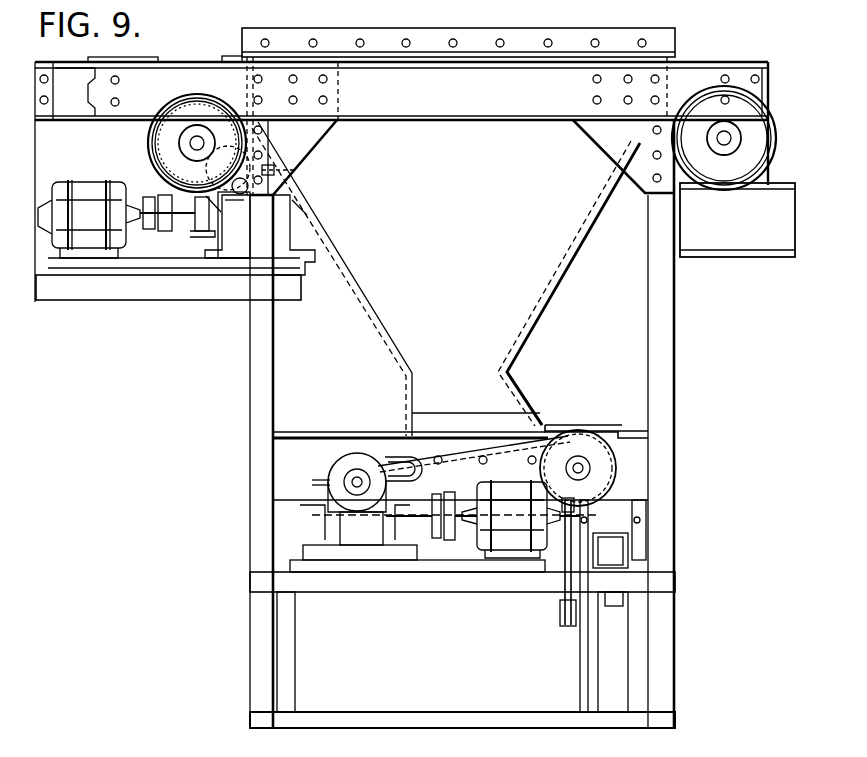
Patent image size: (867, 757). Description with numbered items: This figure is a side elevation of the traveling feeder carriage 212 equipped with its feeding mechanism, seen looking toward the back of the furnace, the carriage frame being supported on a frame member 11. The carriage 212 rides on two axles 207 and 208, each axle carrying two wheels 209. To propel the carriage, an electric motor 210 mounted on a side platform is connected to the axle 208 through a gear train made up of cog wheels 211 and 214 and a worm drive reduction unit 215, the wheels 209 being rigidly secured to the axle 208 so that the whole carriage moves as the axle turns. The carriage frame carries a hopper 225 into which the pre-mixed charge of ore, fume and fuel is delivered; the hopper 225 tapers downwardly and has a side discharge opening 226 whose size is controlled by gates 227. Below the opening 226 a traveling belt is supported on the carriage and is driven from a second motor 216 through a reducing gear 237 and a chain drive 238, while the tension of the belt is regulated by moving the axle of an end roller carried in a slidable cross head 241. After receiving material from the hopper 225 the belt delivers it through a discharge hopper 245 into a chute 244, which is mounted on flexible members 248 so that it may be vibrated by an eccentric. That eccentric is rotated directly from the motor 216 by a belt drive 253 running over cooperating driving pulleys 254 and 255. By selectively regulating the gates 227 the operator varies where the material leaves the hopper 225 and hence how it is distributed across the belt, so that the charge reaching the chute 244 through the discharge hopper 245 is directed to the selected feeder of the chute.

The conveyor frame member 11 is at (740, 236).
The axle 207 is at (197, 143).
The axle 208 is at (722, 138).
The wheels 209 is at (152, 151).
The electric motor 210 is at (86, 196).
The cog wheel 211 is at (178, 72).
The traveling feeder carriage 212 is at (417, 38).
The cog wheel 214 is at (298, 172).
The worm drive reduction unit 215 is at (232, 237).
The motor 216 is at (506, 522).
The hopper 225 is at (545, 279).
The side discharge opening 226 is at (544, 428).
The gates 227 is at (520, 386).
The reducing gear 237 is at (364, 535).
The chain drive 238 is at (428, 460).
The cross head 241 is at (424, 470).
The chute 244 is at (628, 556).
The discharge hopper 245 is at (620, 432).
The flexible members 248 is at (640, 566).
The belt drive 253 is at (565, 592).
The driving pulley 254 is at (565, 620).
The driving pulley 255 is at (566, 530).